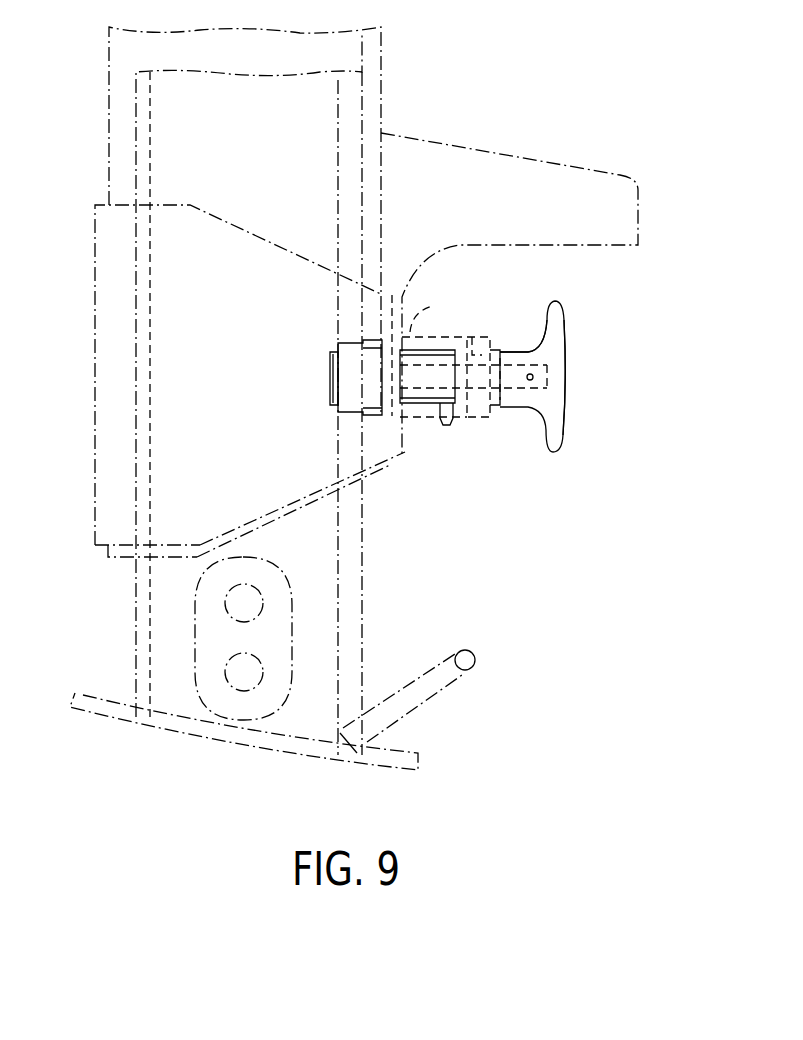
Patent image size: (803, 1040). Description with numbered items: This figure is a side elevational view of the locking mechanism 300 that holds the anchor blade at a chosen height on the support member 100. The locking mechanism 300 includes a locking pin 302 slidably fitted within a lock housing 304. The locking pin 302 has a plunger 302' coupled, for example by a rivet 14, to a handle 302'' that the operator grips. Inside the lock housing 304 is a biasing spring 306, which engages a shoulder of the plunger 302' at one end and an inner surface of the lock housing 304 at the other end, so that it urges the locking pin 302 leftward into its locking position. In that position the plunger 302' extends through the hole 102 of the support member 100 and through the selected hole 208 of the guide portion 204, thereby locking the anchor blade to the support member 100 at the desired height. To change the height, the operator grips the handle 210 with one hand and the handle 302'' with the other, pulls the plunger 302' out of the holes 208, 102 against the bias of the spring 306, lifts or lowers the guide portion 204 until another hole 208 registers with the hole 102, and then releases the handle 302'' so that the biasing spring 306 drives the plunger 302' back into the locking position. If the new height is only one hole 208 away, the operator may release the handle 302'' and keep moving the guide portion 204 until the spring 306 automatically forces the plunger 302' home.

The support member 100 is at (381, 96).
The guide portion 204 is at (136, 627).
The hole 102 is at (365, 417).
The handle 210 is at (470, 671).
The lock housing 304 is at (412, 330).
The locking mechanism 300 is at (595, 468).
The hole 208 is at (338, 357).
The biasing spring 306 is at (408, 405).
The locking pin 302 is at (573, 369).
The plunger 302' is at (497, 338).
The handle 302'' is at (609, 377).
The rivet 14 is at (528, 380).